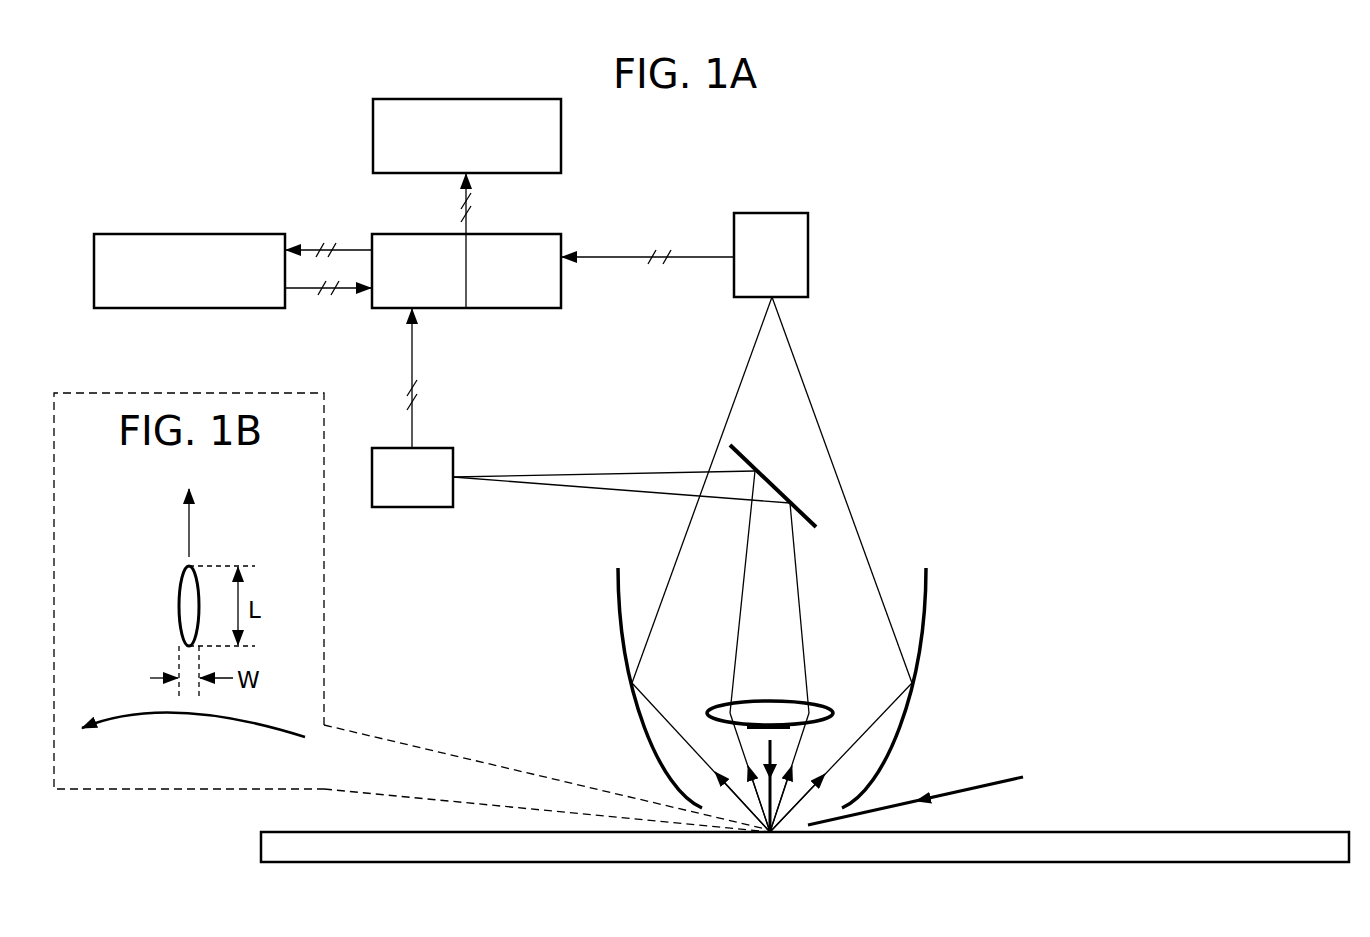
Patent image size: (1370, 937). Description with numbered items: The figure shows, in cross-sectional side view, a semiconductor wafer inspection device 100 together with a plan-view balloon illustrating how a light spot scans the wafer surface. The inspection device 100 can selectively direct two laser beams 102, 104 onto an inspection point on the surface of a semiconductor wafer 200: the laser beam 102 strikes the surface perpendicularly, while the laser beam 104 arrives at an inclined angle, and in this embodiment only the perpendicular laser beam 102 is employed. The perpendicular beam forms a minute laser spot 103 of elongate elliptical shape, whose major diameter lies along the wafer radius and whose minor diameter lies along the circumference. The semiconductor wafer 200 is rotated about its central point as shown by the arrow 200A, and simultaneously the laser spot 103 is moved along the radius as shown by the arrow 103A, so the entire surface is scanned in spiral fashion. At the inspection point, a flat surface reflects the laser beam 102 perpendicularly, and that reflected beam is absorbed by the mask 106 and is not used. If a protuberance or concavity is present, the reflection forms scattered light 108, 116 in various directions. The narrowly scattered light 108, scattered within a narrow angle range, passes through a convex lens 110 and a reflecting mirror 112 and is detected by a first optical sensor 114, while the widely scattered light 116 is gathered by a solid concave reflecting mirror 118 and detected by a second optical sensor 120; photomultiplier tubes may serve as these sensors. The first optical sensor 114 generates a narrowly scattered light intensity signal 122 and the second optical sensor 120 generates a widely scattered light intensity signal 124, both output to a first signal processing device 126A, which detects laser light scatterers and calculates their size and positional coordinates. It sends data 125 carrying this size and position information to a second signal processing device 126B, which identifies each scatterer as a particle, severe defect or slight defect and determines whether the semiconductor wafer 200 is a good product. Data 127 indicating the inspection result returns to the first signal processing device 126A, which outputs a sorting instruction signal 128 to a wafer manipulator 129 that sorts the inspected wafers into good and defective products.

In FIG. 1A, the inspection device 100 is at (803, 144).
In FIG. 1A, the laser beam 102 is at (773, 758).
In FIG. 1A, the laser spot 103 is at (770, 834).
In FIG. 1B, the laser spot 103 is at (179, 597).
In FIG. 1B, the arrow 103A is at (192, 517).
In FIG. 1A, the laser beam 104 is at (1020, 780).
In FIG. 1A, the mask 106 is at (786, 728).
In FIG. 1A, the narrowly scattered light 108 is at (757, 795).
In FIG. 1A, the convex lens 110 is at (778, 701).
In FIG. 1A, the reflecting mirror 112 is at (775, 484).
In FIG. 1A, the first optical sensor 114 is at (392, 448).
In FIG. 1A, the widely scattered light 116 is at (680, 738).
In FIG. 1A, the solid concave reflecting mirror 118 is at (620, 650).
In FIG. 1A, the second optical sensor 120 is at (808, 231).
In FIG. 1A, the narrowly scattered light intensity signal 122 is at (413, 420).
In FIG. 1A, the widely scattered light intensity signal 124 is at (626, 252).
In FIG. 1A, the data 125 is at (306, 248).
In FIG. 1A, the first signal processing device 126A is at (548, 308).
In FIG. 1A, the second signal processing device 126B is at (134, 234).
In FIG. 1A, the data 127 is at (307, 292).
In FIG. 1A, the sorting instruction signal 128 is at (467, 226).
In FIG. 1A, the wafer manipulator 129 is at (373, 120).
In FIG. 1A, the semiconductor wafer 200 is at (1140, 832).
In FIG. 1B, the semiconductor wafer 200 is at (134, 533).
In FIG. 1B, the arrow 200A is at (137, 717).